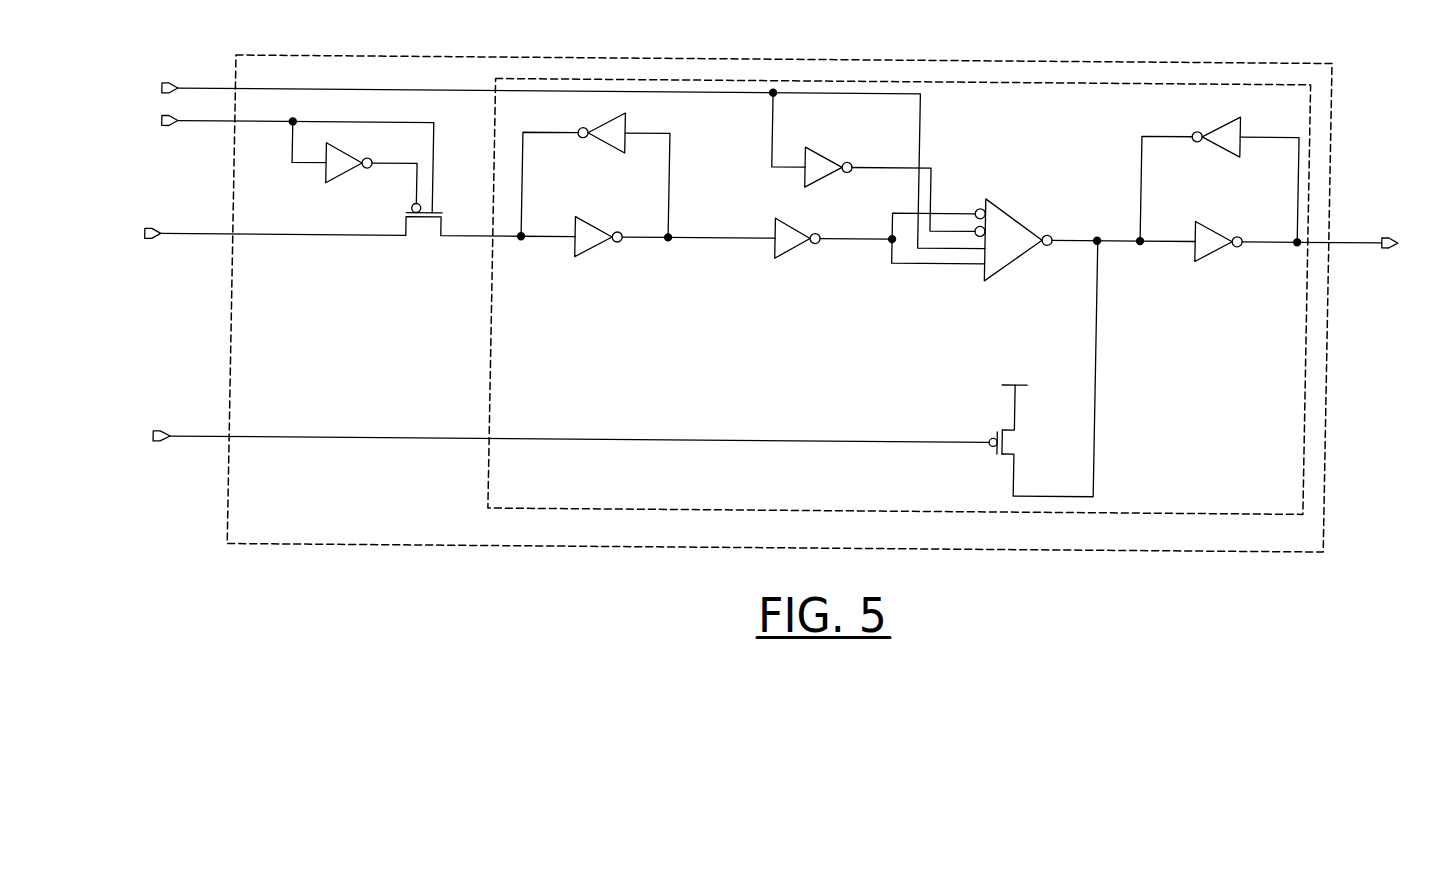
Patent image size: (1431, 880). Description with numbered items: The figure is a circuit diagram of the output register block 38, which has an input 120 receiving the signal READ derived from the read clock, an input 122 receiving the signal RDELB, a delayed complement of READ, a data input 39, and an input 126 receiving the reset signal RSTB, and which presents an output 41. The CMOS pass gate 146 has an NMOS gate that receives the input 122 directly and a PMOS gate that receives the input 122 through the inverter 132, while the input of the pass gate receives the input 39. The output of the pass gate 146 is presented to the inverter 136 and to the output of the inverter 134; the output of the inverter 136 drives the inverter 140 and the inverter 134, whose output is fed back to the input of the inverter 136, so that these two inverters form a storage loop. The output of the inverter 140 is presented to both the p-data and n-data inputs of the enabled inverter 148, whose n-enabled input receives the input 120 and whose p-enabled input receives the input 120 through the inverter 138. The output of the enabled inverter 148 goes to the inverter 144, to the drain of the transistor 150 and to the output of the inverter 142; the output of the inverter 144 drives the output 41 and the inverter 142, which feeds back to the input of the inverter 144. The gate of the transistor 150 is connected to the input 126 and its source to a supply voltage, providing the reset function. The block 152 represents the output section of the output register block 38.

The output register block 38 is at (368, 52).
The input 39 is at (231, 230).
The output 41 is at (1333, 232).
The input 120 is at (233, 84).
The input 122 is at (234, 127).
The input 126 is at (233, 432).
The inverter 132 is at (342, 185).
The inverter 134 is at (614, 152).
The inverter 136 is at (603, 247).
The inverter 138 is at (827, 147).
The inverter 140 is at (794, 254).
The inverter 142 is at (1213, 110).
The inverter 144 is at (1219, 254).
The CMOS pass gate 146 is at (426, 241).
The enabled inverter 148 is at (1021, 201).
The transistor 150 is at (1029, 441).
The block 152 is at (496, 478).